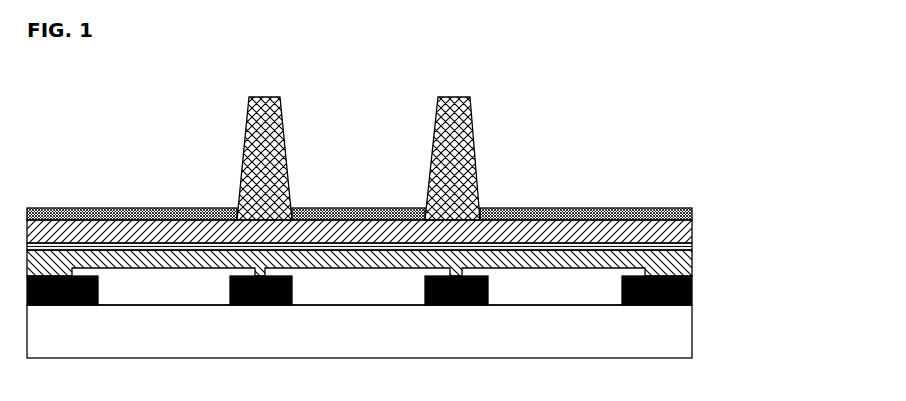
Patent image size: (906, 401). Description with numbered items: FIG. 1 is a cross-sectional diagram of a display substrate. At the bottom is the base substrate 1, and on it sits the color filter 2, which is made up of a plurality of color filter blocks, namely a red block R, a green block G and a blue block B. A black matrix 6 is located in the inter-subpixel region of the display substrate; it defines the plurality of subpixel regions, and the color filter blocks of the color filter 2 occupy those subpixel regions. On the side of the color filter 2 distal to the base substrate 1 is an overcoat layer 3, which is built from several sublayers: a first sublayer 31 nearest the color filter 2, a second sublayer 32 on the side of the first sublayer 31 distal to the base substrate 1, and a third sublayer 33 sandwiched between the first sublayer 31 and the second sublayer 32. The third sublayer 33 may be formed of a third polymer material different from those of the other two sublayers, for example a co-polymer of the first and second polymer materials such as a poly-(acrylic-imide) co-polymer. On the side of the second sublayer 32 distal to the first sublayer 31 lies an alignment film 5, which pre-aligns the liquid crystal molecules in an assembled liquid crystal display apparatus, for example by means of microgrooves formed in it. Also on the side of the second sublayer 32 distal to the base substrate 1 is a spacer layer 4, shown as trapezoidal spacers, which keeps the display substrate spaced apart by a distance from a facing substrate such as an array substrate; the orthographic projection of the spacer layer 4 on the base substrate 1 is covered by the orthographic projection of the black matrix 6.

The base substrate 1 is at (704, 348).
The color filter 2 is at (612, 306).
The overcoat layer 3 is at (411, 248).
The first sublayer 31 is at (704, 260).
The second sublayer 32 is at (397, 228).
The third sublayer 33 is at (704, 248).
The spacer layer 4 is at (483, 162).
The alignment film 5 is at (703, 207).
The black matrix 6 is at (704, 292).